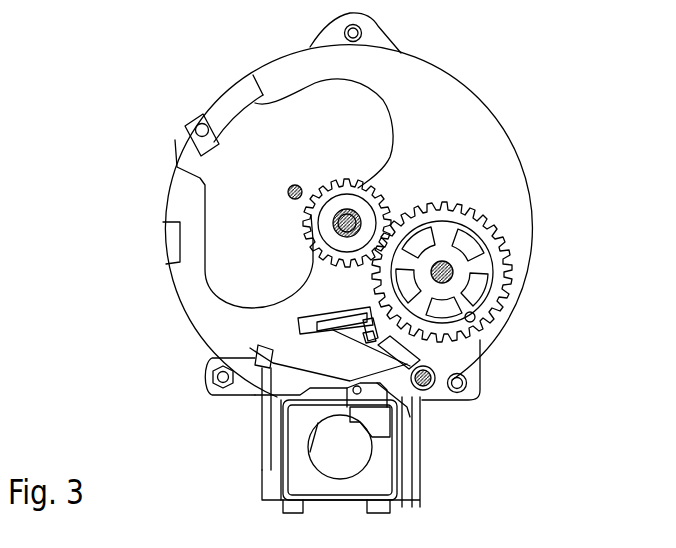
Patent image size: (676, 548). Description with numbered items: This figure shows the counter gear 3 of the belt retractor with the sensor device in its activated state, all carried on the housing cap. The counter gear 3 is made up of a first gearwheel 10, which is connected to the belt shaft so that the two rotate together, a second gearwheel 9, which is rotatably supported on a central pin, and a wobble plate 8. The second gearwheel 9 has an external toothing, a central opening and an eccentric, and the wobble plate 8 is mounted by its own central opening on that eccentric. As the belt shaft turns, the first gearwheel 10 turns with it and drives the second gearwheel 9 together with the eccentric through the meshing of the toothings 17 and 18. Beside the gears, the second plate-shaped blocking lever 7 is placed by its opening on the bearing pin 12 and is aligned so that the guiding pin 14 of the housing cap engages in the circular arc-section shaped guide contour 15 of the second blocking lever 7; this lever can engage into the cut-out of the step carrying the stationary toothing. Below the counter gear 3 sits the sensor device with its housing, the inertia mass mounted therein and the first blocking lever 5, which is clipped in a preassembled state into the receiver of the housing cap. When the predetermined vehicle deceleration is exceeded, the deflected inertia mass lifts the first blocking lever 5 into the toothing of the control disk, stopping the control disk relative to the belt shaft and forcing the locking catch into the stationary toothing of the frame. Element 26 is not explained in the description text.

The counter gear 3 is at (470, 199).
The first blocking lever 5 is at (310, 372).
The second plate-shaped blocking lever 7 is at (310, 363).
The wobble plate 8 is at (477, 295).
The second gearwheel 9 is at (496, 269).
The first gearwheel 10 is at (327, 222).
The bearing pin 12 is at (441, 380).
The guiding pin 14 is at (338, 353).
The guide contour 15 is at (300, 328).
The toothing 17 is at (320, 326).
The toothing 18 is at (500, 239).
The cutout 26 is at (358, 188).